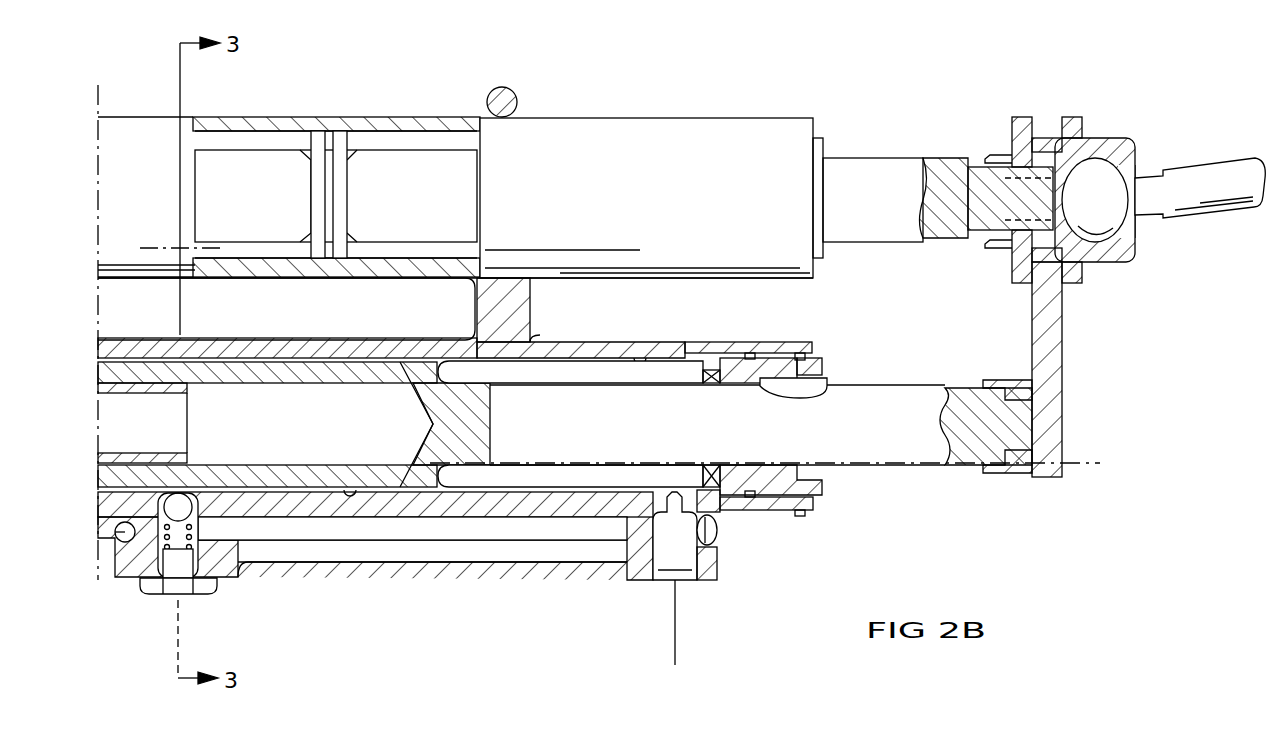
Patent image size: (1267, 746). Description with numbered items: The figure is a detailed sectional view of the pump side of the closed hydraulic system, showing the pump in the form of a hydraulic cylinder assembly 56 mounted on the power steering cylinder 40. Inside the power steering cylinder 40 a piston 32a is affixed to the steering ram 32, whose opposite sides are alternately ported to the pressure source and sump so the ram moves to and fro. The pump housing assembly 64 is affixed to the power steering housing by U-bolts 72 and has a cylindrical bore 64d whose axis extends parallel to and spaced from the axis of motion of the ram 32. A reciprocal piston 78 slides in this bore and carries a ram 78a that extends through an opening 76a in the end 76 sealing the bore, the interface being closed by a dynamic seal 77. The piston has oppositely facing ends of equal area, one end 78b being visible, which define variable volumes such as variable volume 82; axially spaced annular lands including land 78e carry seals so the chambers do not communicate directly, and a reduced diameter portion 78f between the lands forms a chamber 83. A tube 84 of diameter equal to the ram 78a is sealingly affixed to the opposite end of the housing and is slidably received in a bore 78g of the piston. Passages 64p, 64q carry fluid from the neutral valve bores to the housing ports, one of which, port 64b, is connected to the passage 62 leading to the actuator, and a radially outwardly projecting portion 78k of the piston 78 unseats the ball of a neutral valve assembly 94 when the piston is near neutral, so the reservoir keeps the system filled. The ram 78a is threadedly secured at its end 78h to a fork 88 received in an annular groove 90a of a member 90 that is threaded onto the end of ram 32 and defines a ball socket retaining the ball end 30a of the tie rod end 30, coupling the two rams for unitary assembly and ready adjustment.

The tie rod end 30 is at (1207, 168).
The ball end 30a is at (1110, 215).
The ram 32 is at (850, 157).
The piston 32a is at (345, 135).
The power steering cylinder 40 is at (615, 118).
The hydraulic cylinder assembly 56 is at (375, 615).
The passage 62 is at (675, 648).
The housing assembly 64 is at (486, 572).
The port 64b is at (687, 583).
The cylindrical bore 64d is at (650, 357).
The passage 64p is at (103, 542).
The passage 64q is at (302, 528).
The U-bolts 72 is at (498, 92).
The end 76 is at (797, 365).
The opening 76a is at (820, 390).
The dynamic seal 77 is at (720, 470).
The reciprocal piston 78 is at (302, 451).
The ram 78a is at (680, 437).
The end 78b is at (457, 350).
The annular land 78e is at (437, 490).
The reduced diameter portion 78f is at (352, 488).
The bore 78g is at (205, 455).
The end 78h is at (1027, 437).
The radially outwardly projecting portion 78k is at (190, 357).
The variable volume 82 is at (548, 370).
The chamber 83 is at (133, 358).
The tube 84 is at (190, 387).
The fork 88 is at (1066, 372).
The member 90 is at (1108, 267).
The annular groove 90a is at (1057, 117).
The neutral valve assembly 94 is at (247, 570).